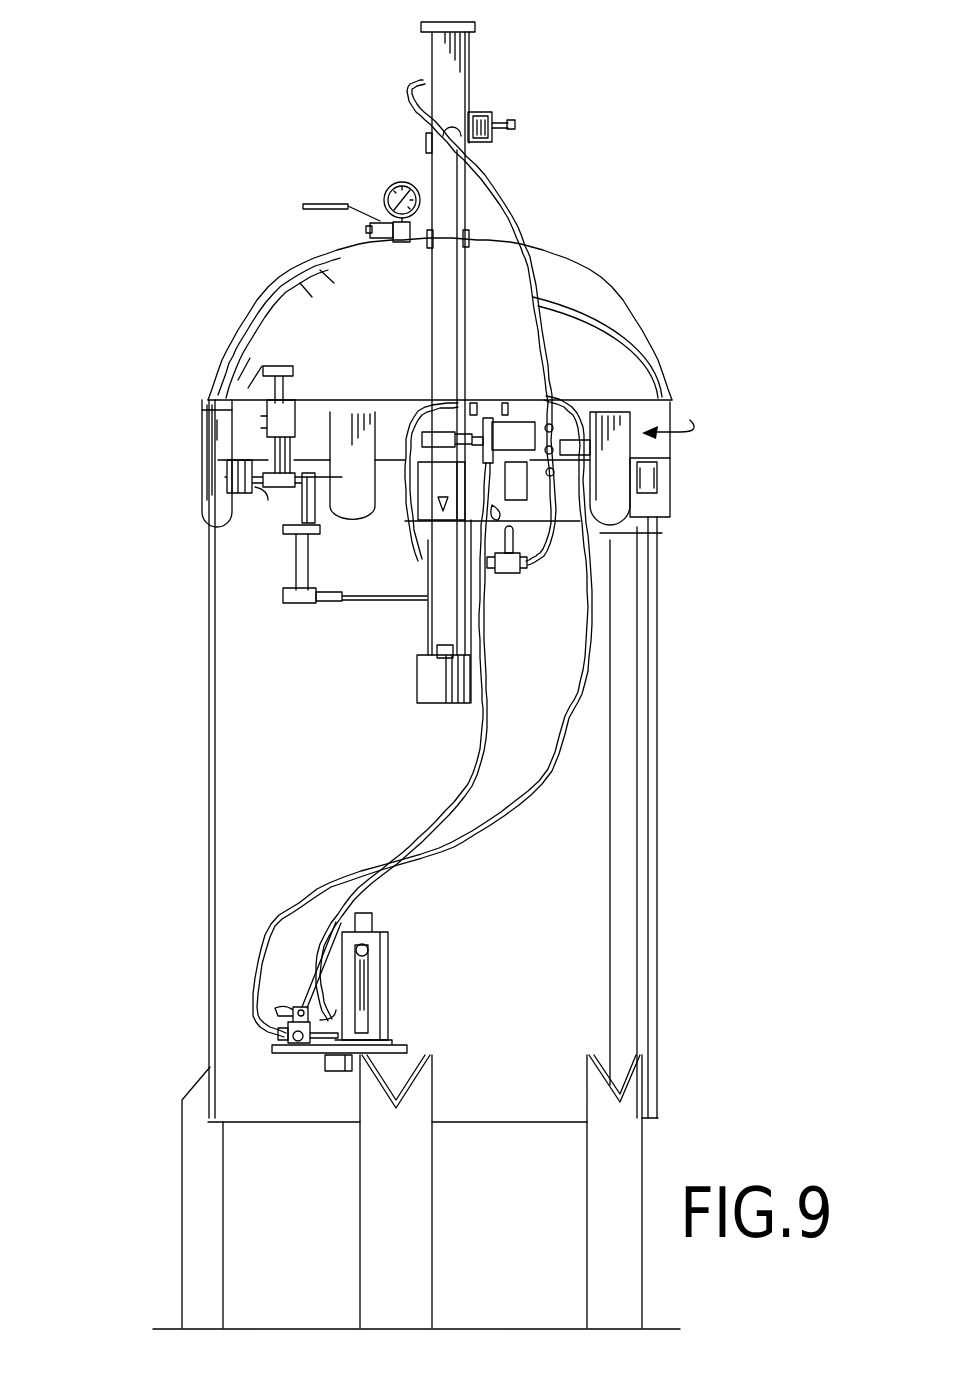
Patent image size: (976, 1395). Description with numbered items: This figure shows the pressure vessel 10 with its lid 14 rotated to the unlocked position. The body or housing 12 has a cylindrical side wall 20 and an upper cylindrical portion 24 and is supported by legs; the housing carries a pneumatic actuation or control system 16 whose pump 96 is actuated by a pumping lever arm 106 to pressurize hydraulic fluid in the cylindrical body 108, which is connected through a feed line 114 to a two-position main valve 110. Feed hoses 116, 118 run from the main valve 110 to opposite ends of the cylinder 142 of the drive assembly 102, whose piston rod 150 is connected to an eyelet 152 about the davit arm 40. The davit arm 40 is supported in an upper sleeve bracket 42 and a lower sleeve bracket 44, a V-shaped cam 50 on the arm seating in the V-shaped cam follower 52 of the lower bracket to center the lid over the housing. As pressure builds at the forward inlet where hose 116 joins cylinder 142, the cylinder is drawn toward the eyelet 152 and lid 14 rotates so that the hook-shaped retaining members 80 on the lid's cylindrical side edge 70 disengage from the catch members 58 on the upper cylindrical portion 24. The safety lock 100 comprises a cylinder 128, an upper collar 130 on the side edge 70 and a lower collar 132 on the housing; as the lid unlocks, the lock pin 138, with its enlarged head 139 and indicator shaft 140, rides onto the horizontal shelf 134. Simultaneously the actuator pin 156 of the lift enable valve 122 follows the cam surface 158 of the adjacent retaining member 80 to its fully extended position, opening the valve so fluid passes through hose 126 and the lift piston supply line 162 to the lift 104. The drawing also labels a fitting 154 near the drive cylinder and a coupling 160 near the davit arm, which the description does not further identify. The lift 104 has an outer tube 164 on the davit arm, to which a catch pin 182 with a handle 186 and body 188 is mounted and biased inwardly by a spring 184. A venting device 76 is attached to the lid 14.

The pressure vessel 10 is at (864, 200).
The body or housing 12 is at (226, 838).
The lid 14 is at (318, 290).
The pneumatic actuation or control system 16 is at (240, 1034).
The cylindrical side wall 20 is at (292, 712).
The upper cylindrical portion 24 is at (672, 490).
The davit arm 40 is at (432, 284).
The upper sleeve bracket 42 is at (427, 545).
The lower sleeve bracket 44 is at (425, 605).
The V-shaped cam 50 is at (470, 648).
The V-shaped cam follower 52 is at (443, 703).
The catch members 58 is at (385, 488).
The cylindrical side edge 70 is at (655, 414).
The venting device 76 is at (372, 170).
The hook-shaped retaining members 80 is at (188, 503).
The pump 96 is at (405, 918).
The safety lock 100 is at (248, 420).
The drive assembly 102 is at (578, 378).
The lift 104 is at (488, 50).
The pumping lever arm 106 is at (368, 952).
The cylindrical body 108 is at (378, 1000).
The two-position main valve 110 is at (290, 1053).
The feed line 114 is at (303, 941).
The feed hose 116 is at (487, 738).
The feed hose 118 is at (520, 790).
The lift enable valve 122 is at (513, 572).
The hose 126 is at (418, 522).
The cylinder 128 is at (297, 567).
The upper collar 130 is at (280, 417).
The lower collar 132 is at (336, 471).
The horizontal shelf 134 is at (205, 490).
The lock pin 138 is at (257, 371).
The enlarged head 139 is at (278, 393).
The indicator shaft 140 is at (232, 485).
The cylinder 142 is at (510, 430).
The piston rod 150 is at (433, 437).
The eyelet 152 is at (450, 420).
The fitting 154 is at (612, 400).
The actuator pin 156 is at (520, 543).
The cam surface 158 is at (557, 541).
The coupling 160 is at (415, 688).
The lift piston supply line 162 is at (523, 232).
The outer tube 164 is at (445, 62).
The catch pin 182 is at (512, 116).
The spring 184 is at (480, 112).
The handle 186 is at (514, 126).
The body 188 is at (514, 128).